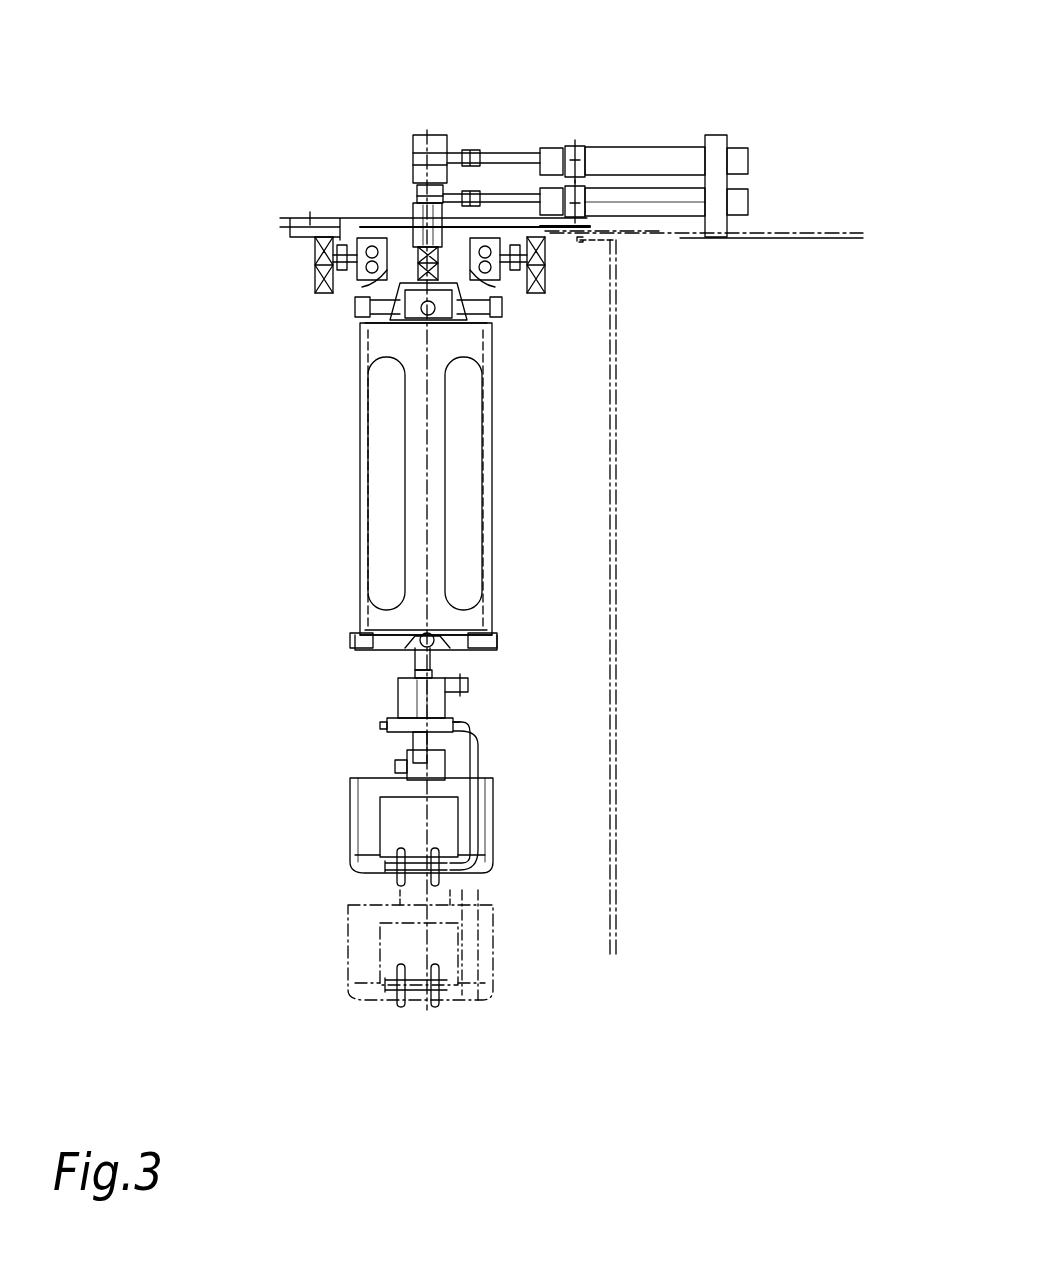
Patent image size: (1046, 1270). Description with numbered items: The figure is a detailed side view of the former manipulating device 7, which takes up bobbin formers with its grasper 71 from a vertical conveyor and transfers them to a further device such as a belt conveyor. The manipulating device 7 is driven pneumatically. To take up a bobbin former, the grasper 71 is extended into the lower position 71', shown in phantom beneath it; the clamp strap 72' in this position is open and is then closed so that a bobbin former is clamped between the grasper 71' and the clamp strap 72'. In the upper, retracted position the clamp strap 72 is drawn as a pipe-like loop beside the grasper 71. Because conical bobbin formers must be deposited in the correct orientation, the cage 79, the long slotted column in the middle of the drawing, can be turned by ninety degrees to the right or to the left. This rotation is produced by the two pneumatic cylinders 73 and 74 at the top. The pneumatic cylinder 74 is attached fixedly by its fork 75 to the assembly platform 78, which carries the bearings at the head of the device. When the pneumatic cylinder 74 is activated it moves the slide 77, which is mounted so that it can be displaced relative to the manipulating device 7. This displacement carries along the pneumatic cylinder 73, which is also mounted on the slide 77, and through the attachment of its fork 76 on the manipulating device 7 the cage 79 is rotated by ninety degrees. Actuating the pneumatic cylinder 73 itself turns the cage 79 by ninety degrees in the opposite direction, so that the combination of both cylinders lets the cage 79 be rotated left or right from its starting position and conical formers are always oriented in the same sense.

The manipulating device 7 is at (290, 581).
The grasper 71 is at (311, 851).
The grasper in extended position 71' is at (321, 991).
The clamp strap 72 is at (473, 770).
The clamp strap in open position 72' is at (497, 945).
The pneumatic cylinder 73 is at (657, 153).
The pneumatic cylinder 74 is at (650, 205).
The fork 75 is at (413, 205).
The fork 76 is at (447, 136).
The slide 77 is at (722, 138).
The assembly platform 78 is at (353, 218).
The cage 79 is at (363, 414).